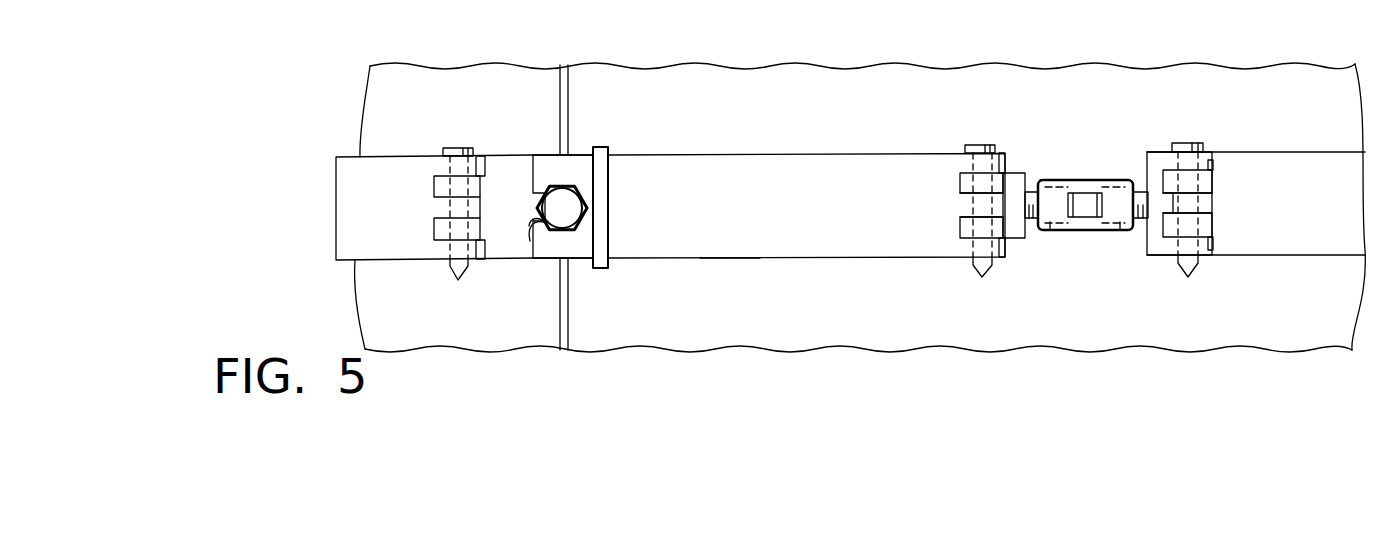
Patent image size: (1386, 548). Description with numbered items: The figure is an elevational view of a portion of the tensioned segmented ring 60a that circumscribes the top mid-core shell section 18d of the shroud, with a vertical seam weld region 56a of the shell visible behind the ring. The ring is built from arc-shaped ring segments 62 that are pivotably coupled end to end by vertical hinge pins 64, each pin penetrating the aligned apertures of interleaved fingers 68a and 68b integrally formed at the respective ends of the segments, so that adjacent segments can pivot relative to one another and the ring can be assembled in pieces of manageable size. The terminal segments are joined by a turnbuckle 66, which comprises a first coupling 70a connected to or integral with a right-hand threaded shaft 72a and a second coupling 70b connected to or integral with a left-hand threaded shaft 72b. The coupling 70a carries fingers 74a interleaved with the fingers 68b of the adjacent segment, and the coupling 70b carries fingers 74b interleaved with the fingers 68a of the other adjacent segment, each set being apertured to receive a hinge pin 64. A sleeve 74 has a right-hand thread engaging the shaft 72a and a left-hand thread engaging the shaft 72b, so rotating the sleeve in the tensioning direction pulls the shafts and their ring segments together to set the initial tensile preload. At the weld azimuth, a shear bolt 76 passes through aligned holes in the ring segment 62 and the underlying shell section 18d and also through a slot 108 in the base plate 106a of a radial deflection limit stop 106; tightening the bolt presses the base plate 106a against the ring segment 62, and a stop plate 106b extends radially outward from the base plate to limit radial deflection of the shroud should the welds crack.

The top mid-core shell section 18d is at (695, 77).
The vertical support member 56a is at (566, 92).
The segmented ring 60a is at (694, 263).
The ring segment 62 is at (382, 250).
The hinge pin 64 is at (458, 150).
The turnbuckle 66 is at (1103, 178).
The finger 68a is at (437, 222).
The finger 68b is at (480, 168).
The first coupling 70a is at (1022, 242).
The second coupling 70b is at (1160, 257).
The right-hand threaded shaft 72a is at (1047, 237).
The left-hand threaded shaft 72b is at (1120, 237).
The sleeve 74 is at (1094, 178).
The finger 74a is at (958, 217).
The finger 74b is at (1202, 204).
The shear bolt 76 is at (590, 194).
The radial deflection limit stop 106 is at (612, 240).
The base plate 106a is at (580, 247).
The stop plate 106b is at (603, 173).
The slot 108 is at (532, 241).